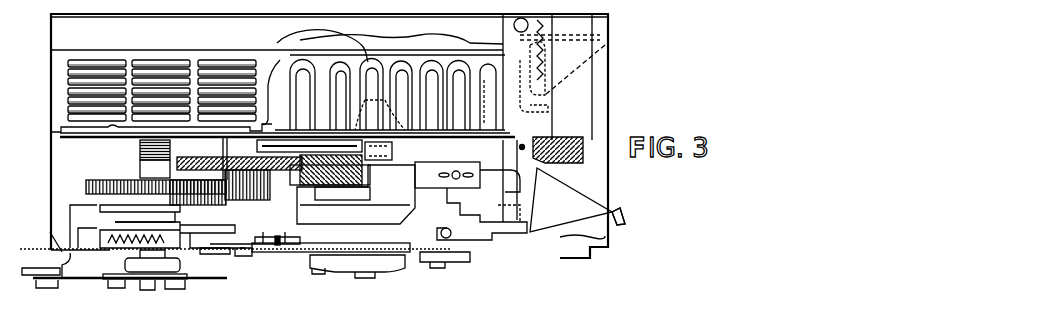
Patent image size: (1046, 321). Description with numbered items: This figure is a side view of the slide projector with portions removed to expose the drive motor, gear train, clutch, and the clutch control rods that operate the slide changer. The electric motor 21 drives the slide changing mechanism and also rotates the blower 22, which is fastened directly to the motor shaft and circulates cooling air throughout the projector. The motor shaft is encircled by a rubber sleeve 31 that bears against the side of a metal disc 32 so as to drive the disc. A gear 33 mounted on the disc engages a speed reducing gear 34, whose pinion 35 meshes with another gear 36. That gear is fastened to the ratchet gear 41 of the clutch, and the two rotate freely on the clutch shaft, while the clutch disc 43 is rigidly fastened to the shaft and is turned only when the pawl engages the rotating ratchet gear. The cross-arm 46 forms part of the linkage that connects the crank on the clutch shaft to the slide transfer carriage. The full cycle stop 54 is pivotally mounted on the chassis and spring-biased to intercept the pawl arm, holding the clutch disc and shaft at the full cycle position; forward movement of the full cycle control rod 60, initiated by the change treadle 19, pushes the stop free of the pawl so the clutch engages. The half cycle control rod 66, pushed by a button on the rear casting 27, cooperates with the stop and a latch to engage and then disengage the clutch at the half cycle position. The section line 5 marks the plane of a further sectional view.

The section line 5 is at (60, 178).
The change treadle 19 is at (620, 224).
The electric motor 21 is at (375, 265).
The blower 22 is at (379, 80).
The rear casting 27 is at (585, 22).
The rubber sleeve 31 is at (393, 143).
The metal disc 32 is at (355, 155).
The gear 33 is at (298, 184).
The speed reducing gear 34 is at (210, 158).
The pinion 35 is at (250, 195).
The gear 36 is at (110, 180).
The ratchet gear 41 is at (135, 190).
The clutch disc 43 is at (195, 248).
The cross-arm 46 is at (88, 282).
The full cycle stop 54 is at (78, 220).
The full cycle control rod 60 is at (472, 247).
The half cycle control rod 66 is at (277, 252).